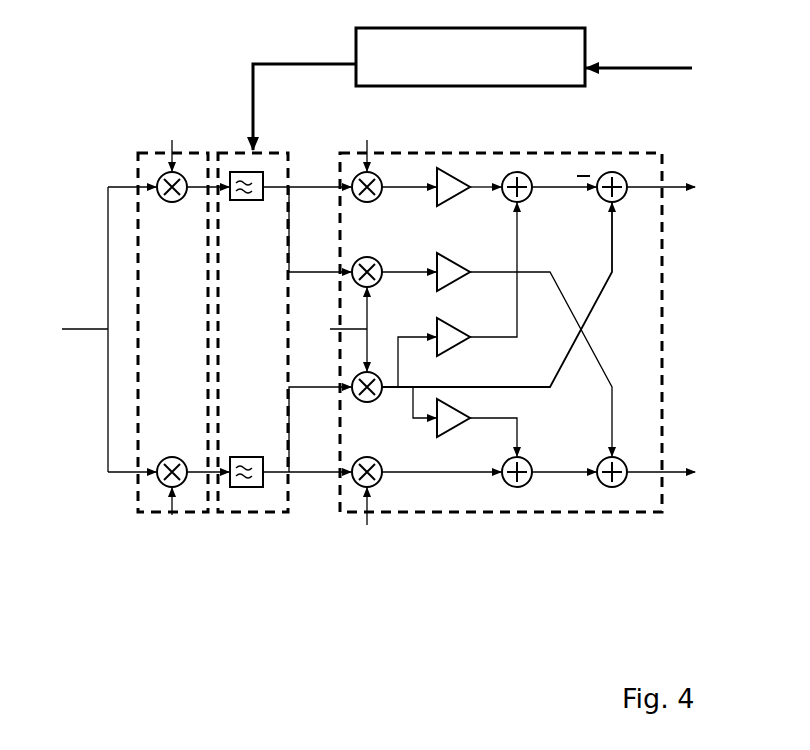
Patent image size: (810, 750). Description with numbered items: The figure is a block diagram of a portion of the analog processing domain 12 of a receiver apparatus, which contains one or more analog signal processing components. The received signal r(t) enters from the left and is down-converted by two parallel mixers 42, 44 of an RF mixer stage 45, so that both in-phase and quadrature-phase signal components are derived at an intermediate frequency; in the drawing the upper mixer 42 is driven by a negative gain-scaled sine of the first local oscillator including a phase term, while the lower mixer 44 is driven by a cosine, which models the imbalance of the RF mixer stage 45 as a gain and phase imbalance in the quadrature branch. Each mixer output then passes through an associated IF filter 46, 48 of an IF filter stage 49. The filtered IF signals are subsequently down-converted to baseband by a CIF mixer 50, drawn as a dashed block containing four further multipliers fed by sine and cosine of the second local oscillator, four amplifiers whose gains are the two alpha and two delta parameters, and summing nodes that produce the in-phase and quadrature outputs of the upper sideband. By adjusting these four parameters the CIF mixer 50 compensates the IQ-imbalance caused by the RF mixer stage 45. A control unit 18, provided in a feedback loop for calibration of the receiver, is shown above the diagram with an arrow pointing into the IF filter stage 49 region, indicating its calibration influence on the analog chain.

The analog processing domain 12 is at (79, 524).
The control unit 18 is at (472, 89).
The mixer 42 is at (172, 203).
The mixer 44 is at (172, 456).
The RF mixer stage 45 is at (137, 158).
The IF filter 46 is at (247, 201).
The IF filter 48 is at (252, 456).
The IF filter stage 49 is at (262, 516).
The CIF mixer 50 is at (662, 281).